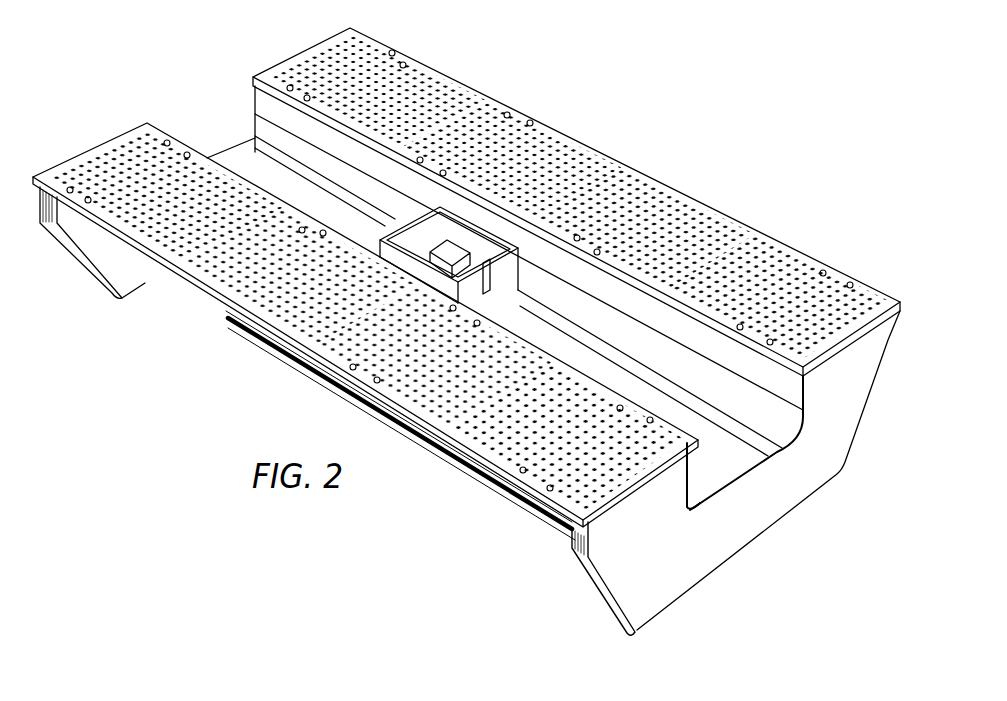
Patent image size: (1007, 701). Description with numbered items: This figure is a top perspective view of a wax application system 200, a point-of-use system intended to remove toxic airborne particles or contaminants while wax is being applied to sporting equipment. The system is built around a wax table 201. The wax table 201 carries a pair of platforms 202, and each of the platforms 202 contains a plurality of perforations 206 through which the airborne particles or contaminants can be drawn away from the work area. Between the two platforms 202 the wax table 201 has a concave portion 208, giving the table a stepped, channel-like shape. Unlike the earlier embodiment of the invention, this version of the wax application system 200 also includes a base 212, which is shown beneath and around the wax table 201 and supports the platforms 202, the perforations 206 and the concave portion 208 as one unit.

The wax application system 200 is at (466, 323).
The wax table 201 is at (466, 323).
The platforms 202 is at (466, 269).
The perforations 206 is at (548, 168).
The concave portion 208 is at (253, 158).
The base 212 is at (725, 535).